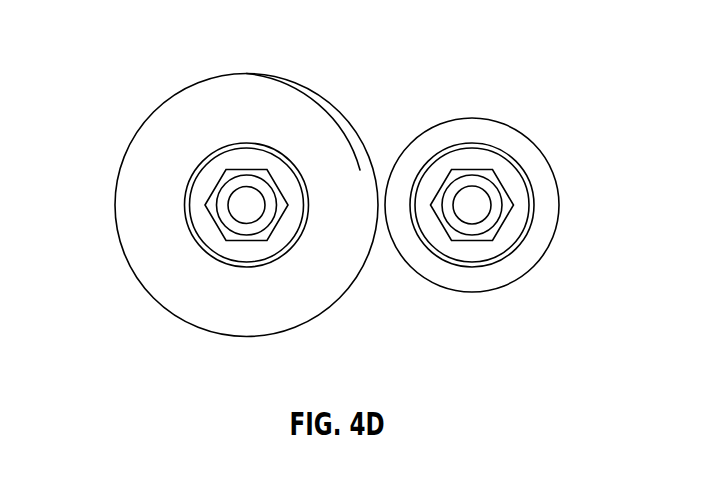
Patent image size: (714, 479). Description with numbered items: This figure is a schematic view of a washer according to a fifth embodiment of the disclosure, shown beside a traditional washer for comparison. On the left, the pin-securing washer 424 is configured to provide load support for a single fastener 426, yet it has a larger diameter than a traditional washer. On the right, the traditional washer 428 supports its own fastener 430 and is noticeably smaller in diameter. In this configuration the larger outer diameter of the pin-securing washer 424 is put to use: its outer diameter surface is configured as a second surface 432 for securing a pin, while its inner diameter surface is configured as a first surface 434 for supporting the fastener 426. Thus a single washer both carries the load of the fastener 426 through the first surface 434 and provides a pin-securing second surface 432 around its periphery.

The pin-securing washer 424 is at (148, 118).
The fastener 426 is at (245, 247).
The washer 428 is at (468, 292).
The fastener 430 is at (472, 160).
The second surface 432 is at (358, 167).
The first surface 434 is at (213, 268).